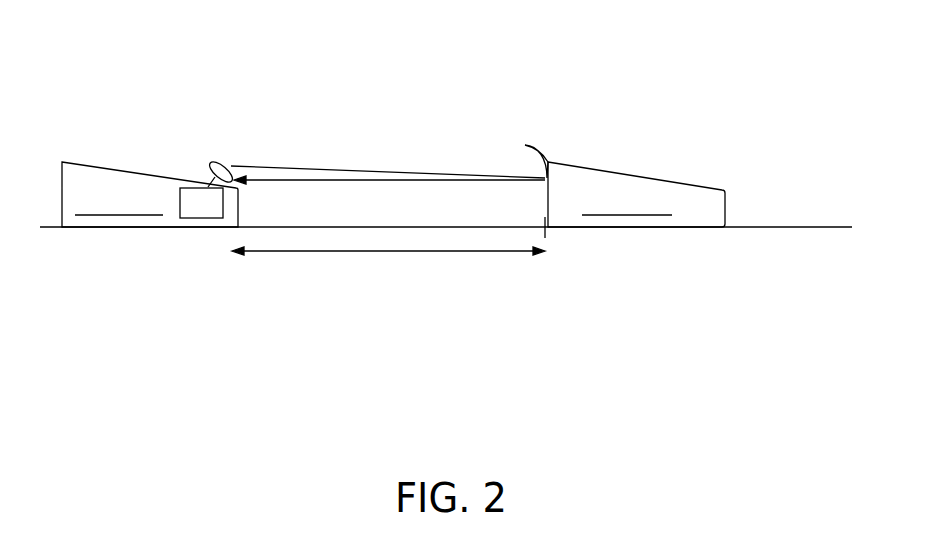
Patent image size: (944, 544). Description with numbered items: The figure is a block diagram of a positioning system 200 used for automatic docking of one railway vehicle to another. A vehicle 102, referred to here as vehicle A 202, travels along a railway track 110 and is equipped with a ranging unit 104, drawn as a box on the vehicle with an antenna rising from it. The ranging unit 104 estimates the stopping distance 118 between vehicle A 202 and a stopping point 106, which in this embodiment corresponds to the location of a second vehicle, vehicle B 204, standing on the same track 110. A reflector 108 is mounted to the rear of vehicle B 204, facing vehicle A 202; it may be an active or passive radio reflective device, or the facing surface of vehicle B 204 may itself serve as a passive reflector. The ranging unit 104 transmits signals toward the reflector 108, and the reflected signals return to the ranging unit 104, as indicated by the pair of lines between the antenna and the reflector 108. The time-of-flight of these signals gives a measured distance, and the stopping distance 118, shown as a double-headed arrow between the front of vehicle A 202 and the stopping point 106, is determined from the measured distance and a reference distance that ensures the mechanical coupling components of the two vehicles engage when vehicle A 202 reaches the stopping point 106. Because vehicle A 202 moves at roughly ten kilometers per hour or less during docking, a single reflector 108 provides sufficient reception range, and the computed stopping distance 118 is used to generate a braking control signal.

The vehicle 102 is at (85, 162).
The ranging unit 104 is at (185, 188).
The stopping point 106 is at (545, 238).
The reflector 108 is at (544, 122).
The railway track 110 is at (792, 227).
The stopping distance 118 is at (355, 251).
The positioning system 200 is at (465, 466).
The vehicle A 202 is at (219, 88).
The vehicle B 204 is at (674, 117).